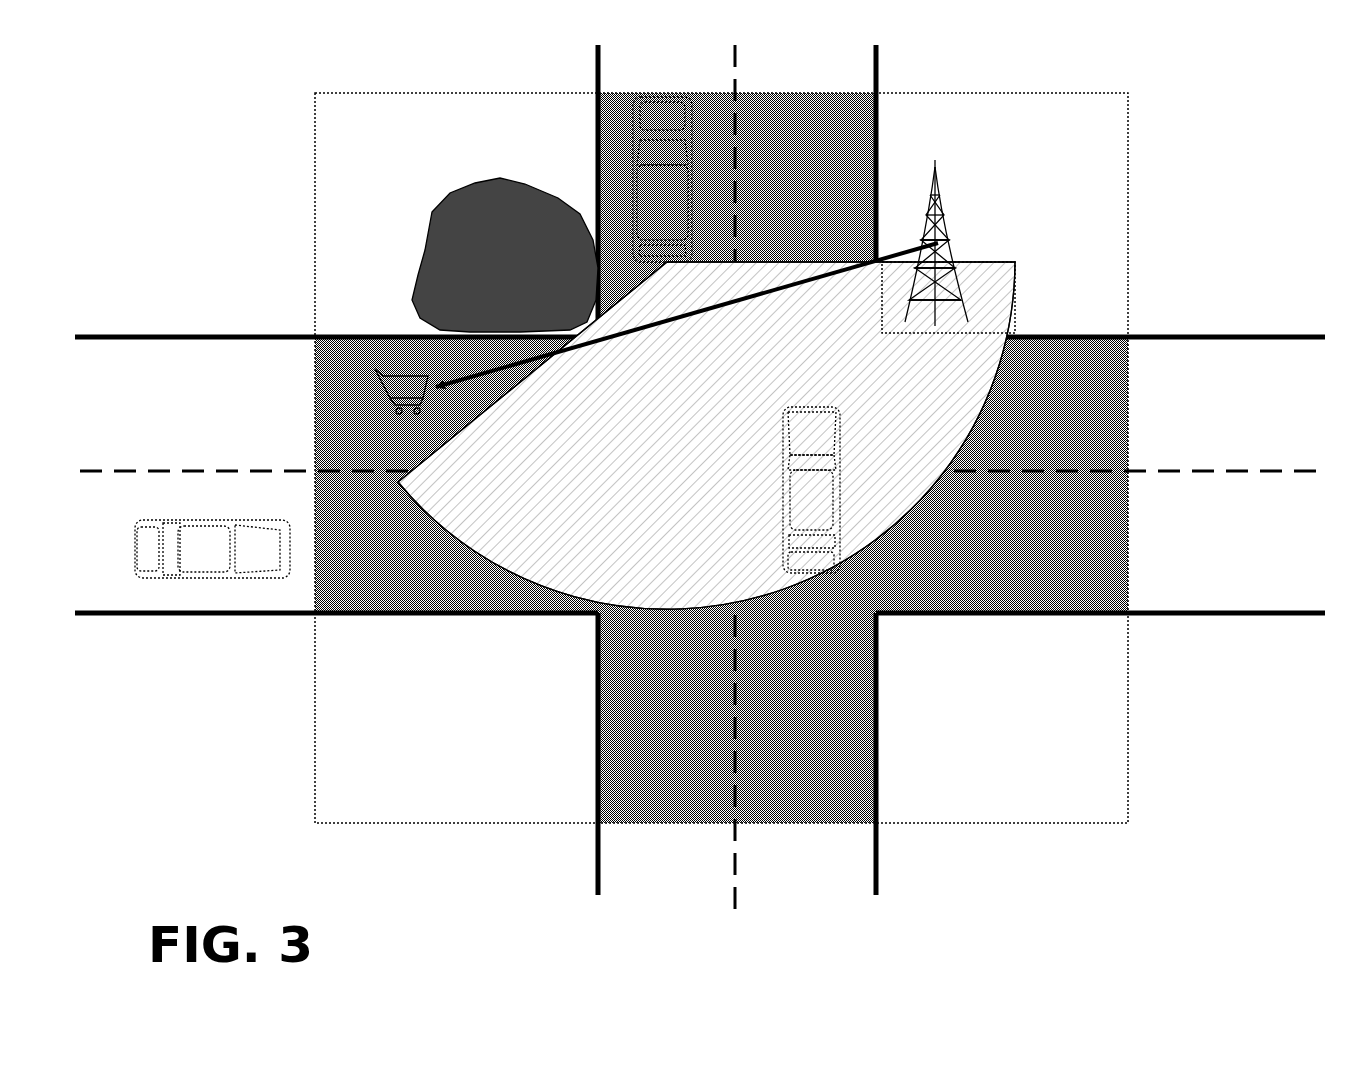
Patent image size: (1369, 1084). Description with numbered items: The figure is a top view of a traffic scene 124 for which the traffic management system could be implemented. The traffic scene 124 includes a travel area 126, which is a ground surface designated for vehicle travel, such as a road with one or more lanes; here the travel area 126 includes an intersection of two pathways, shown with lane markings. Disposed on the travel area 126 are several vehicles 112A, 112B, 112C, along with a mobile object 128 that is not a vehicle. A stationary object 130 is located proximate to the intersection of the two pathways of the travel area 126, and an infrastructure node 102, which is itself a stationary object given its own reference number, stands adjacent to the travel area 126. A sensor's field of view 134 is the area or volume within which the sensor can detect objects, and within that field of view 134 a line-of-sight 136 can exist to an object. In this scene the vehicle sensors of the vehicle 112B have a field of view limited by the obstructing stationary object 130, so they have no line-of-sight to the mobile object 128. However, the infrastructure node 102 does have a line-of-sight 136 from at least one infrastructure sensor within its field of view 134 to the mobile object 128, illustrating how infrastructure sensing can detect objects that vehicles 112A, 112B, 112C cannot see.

The infrastructure node 102 is at (944, 208).
The vehicle 112A is at (833, 455).
The vehicle 112B is at (684, 244).
The vehicle 112C is at (221, 563).
The traffic scene 124 is at (212, 128).
The travel area 126 is at (1222, 408).
The mobile object 128 is at (382, 392).
The stationary object 130 is at (432, 207).
The field of view 134 is at (476, 556).
The line-of-sight 136 is at (795, 283).